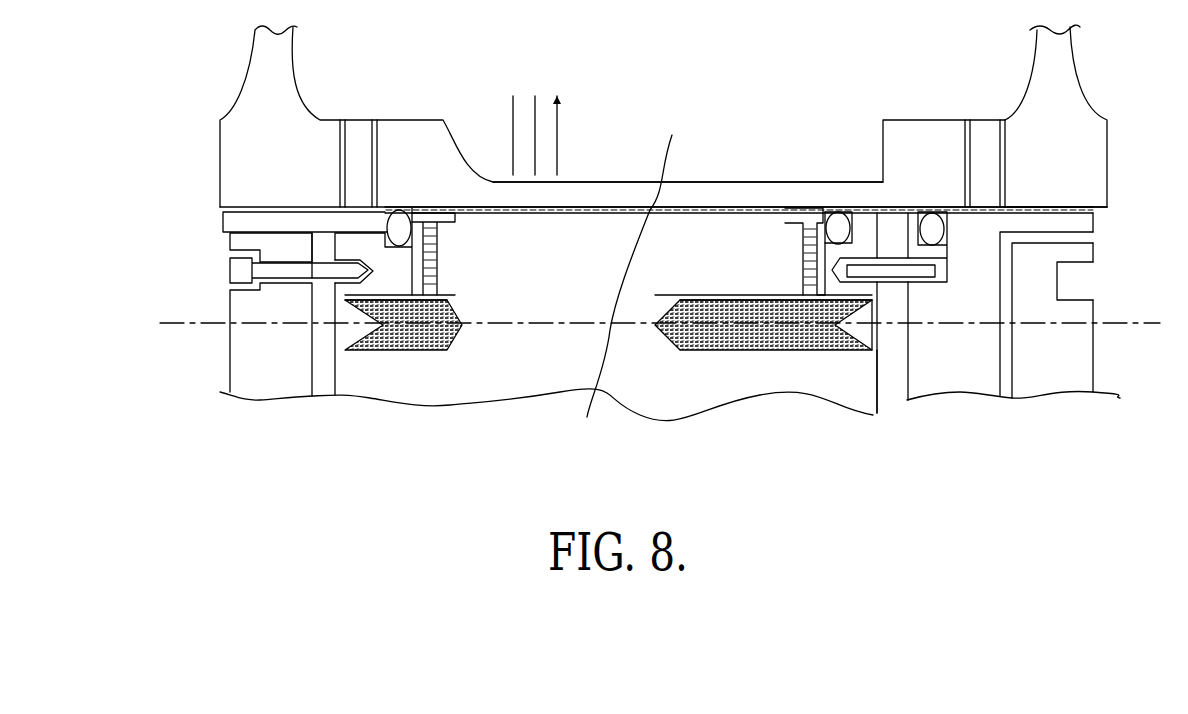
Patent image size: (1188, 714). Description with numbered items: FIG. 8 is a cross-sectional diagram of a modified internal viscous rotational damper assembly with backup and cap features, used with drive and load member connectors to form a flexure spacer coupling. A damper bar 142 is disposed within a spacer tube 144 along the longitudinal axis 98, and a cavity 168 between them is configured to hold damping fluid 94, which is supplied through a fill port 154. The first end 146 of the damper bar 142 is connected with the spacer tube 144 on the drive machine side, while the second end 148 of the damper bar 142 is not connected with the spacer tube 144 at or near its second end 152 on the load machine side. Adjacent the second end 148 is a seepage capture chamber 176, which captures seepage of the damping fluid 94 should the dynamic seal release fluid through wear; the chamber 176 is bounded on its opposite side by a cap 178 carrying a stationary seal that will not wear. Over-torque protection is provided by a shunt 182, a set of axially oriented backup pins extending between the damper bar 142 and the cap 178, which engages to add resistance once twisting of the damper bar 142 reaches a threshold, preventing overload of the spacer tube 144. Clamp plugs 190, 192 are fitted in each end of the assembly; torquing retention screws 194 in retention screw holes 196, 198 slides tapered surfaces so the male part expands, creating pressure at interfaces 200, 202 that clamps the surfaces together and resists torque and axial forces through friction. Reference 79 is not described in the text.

The seal groove wall 79 is at (884, 332).
The damping fluid 94 is at (737, 210).
The longitudinal axis 98 is at (660, 336).
The damper bar 142 is at (520, 342).
The spacer tube 144 is at (767, 193).
The first end of damper bar 146 is at (286, 220).
The second end of damper bar 148 is at (863, 227).
The second end of spacer tube 152 is at (1037, 145).
The fill port 154 is at (323, 331).
The cavity 168 is at (597, 207).
The seepage capture chamber 176 is at (888, 374).
The cap 178 is at (970, 368).
The shunt 182 is at (866, 227).
The clamp plug 190 is at (240, 363).
The clamp plug 192 is at (1062, 352).
The retention screw 194 is at (228, 270).
The retention screw hole 196 is at (360, 272).
The retention screw hole 198 is at (1045, 280).
The interface 200 is at (253, 208).
The interface 202 is at (1057, 207).